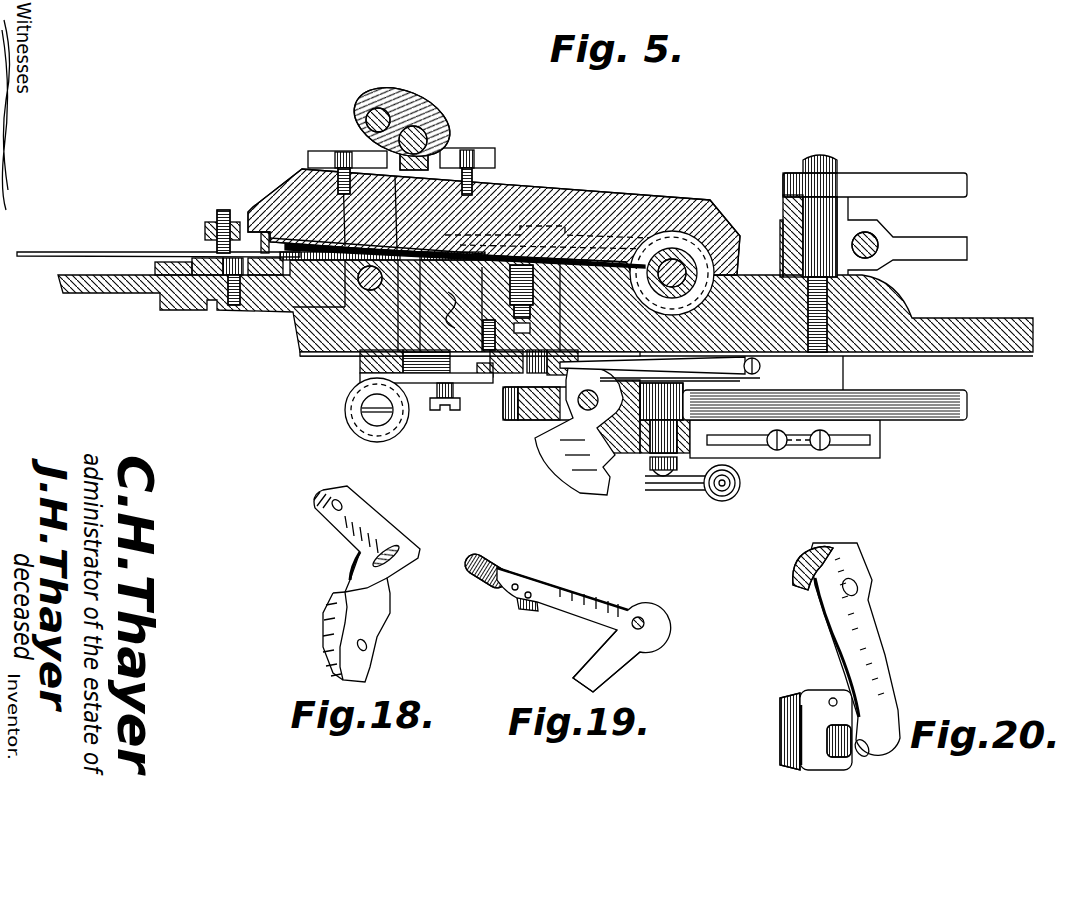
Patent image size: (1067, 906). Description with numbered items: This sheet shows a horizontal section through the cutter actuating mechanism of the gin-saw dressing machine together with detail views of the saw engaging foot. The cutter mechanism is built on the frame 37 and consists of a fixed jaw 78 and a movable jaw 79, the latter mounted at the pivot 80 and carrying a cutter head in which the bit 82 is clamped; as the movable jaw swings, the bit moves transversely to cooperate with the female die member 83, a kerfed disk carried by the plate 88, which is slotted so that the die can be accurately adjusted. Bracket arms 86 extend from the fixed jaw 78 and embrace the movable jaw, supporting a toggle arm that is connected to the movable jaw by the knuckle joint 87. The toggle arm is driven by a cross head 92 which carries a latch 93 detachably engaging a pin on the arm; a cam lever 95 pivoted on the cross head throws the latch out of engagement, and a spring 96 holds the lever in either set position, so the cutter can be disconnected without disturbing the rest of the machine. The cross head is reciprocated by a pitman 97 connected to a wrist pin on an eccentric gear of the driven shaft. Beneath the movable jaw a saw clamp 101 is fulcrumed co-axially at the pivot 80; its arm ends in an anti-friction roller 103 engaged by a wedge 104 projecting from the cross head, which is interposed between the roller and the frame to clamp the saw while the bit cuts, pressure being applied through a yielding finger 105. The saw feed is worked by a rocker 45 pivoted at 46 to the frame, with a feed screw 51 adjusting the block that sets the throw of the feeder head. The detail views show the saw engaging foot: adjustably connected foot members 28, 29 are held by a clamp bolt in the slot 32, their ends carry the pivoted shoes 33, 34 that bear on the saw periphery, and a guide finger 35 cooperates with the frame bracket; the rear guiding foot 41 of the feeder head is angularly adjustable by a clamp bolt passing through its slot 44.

In FIG. 5, the frame 37 is at (106, 295).
In FIG. 5, the fixed jaw 78 is at (317, 351).
In FIG. 5, the movable jaw 79 is at (560, 186).
In FIG. 5, the pivot 80 is at (694, 232).
In FIG. 5, the bit 82 is at (247, 208).
In FIG. 5, the female die member 83 is at (283, 262).
In FIG. 5, the bracket arms 86 is at (350, 150).
In FIG. 5, the knuckle joint 87 is at (415, 104).
In FIG. 5, the plate 88 is at (168, 262).
In FIG. 5, the cross head 92 is at (640, 450).
In FIG. 5, the latch 93 is at (513, 421).
In FIG. 5, the cam lever 95 is at (573, 474).
In FIG. 5, the spring 96 is at (727, 372).
In FIG. 5, the pitman 97 is at (943, 410).
In FIG. 5, the saw clamp 101 is at (650, 192).
In FIG. 5, the anti-friction roller 103 is at (389, 438).
In FIG. 5, the wedge 104 is at (357, 386).
In FIG. 5, the yielding finger 105 is at (268, 230).
In FIG. 5, the pivot 46 is at (820, 158).
In FIG. 5, the feed screw 51 is at (868, 236).
In FIG. 5, the rocker 45 is at (953, 243).
In FIG. 18, the slot 44 is at (398, 552).
In FIG. 18, the rear guiding foot 41 is at (369, 632).
In FIG. 19, the shoe 34 is at (492, 580).
In FIG. 19, the foot member 29 is at (575, 603).
In FIG. 19, the guide finger 35 is at (615, 663).
In FIG. 20, the foot member 28 is at (878, 638).
In FIG. 20, the slot 32 is at (802, 588).
In FIG. 20, the shoe 33 is at (780, 730).